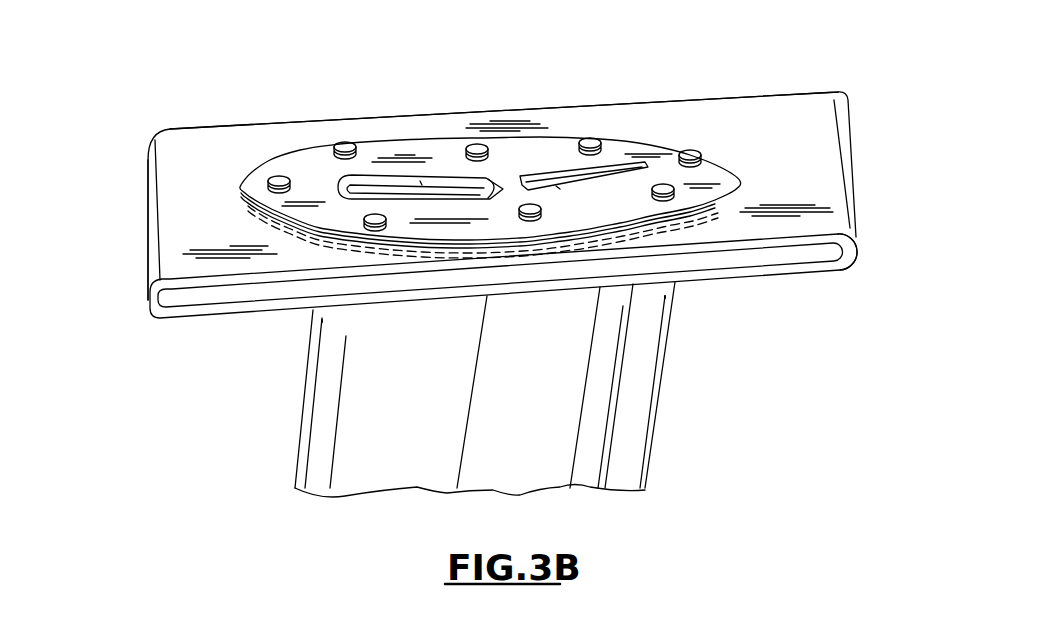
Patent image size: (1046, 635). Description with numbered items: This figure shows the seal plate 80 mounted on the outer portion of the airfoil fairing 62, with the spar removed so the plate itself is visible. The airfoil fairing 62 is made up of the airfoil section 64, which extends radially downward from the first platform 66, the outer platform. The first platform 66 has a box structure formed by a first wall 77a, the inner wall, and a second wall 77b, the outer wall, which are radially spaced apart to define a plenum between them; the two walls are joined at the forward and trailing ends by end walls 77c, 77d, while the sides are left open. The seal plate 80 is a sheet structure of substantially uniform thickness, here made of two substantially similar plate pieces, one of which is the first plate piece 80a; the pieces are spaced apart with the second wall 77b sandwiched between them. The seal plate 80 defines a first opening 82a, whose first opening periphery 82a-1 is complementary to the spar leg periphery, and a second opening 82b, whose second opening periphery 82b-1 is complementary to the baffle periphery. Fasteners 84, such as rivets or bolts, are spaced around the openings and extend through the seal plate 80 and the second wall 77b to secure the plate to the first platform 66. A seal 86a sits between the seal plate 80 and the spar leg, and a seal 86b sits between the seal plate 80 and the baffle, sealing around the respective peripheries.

The airfoil fairing 62 is at (203, 311).
The airfoil section 64 is at (653, 423).
The first platform 66 is at (150, 307).
The first wall 77a is at (278, 310).
The second wall 77b is at (237, 140).
The end wall 77c is at (157, 273).
The end wall 77d is at (850, 257).
The seal plate 80 is at (667, 136).
The first plate piece 80a is at (717, 177).
The first opening 82a is at (397, 192).
The first opening periphery 82a-1 is at (433, 183).
The second opening 82b is at (603, 171).
The second opening periphery 82b-1 is at (566, 163).
The fasteners 84 is at (343, 146).
The seal 86a is at (420, 183).
The seal 86b is at (558, 188).